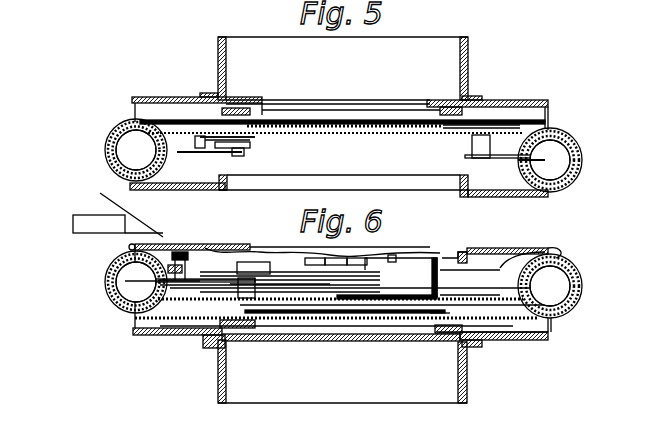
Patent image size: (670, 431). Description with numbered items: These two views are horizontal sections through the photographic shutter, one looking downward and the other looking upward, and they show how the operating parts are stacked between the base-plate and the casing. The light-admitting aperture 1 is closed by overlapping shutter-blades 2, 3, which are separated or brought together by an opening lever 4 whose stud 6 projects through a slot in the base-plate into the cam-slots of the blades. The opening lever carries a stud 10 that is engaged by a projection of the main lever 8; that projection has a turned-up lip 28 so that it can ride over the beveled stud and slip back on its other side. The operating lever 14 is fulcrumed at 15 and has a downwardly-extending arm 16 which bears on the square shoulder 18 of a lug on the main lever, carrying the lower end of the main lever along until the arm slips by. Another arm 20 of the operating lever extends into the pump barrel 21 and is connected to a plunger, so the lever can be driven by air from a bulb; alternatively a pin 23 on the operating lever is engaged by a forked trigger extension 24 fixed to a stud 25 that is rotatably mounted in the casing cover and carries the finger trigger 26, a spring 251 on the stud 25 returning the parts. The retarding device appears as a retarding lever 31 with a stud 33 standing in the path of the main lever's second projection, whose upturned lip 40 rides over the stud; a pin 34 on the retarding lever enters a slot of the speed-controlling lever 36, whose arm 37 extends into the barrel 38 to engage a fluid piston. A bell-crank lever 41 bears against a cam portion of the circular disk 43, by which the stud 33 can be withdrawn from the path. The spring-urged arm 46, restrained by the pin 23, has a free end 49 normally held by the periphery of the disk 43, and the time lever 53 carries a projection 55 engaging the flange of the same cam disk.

In FIG. 6, the light-admitting aperture 1 is at (272, 325).
In FIG. 5, the shutter-blade 2 is at (316, 130).
In FIG. 6, the shutter-blade 2 is at (305, 312).
In FIG. 5, the shutter-blade 3 is at (394, 130).
In FIG. 6, the shutter-blade 3 is at (400, 318).
In FIG. 6, the opening lever 4 is at (372, 302).
In FIG. 6, the stud 6 is at (338, 318).
In FIG. 5, the main lever 8 is at (264, 137).
In FIG. 6, the main lever 8 is at (313, 297).
In FIG. 6, the stud 10 is at (413, 293).
In FIG. 5, the operating lever 14 is at (208, 153).
In FIG. 6, the operating lever 14 is at (185, 292).
In FIG. 6, the fulcrum 15 is at (196, 302).
In FIG. 5, the arm 16 is at (250, 148).
In FIG. 5, the square shoulder 18 is at (238, 148).
In FIG. 6, the arm 20 is at (134, 287).
In FIG. 5, the pump barrel 21 is at (117, 122).
In FIG. 6, the pump barrel 21 is at (107, 281).
In FIG. 6, the pin 23 is at (200, 256).
In FIG. 6, the trigger extension 24 is at (115, 263).
In FIG. 5, the stud 25 is at (198, 158).
In FIG. 6, the stud 25 is at (180, 246).
In FIG. 6, the trigger 26 is at (73, 226).
In FIG. 6, the projecting lip 28 is at (407, 292).
In FIG. 6, the retarding lever 31 is at (495, 305).
In FIG. 6, the stud 33 is at (452, 296).
In FIG. 6, the pin 34 is at (548, 252).
In FIG. 5, the speed-controlling lever 36 is at (518, 163).
In FIG. 5, the arm 37 is at (540, 166).
In FIG. 5, the barrel 38 is at (574, 137).
In FIG. 6, the barrel 38 is at (582, 278).
In FIG. 6, the upturned lip 40 is at (452, 292).
In FIG. 6, the bell-crank lever 41 is at (445, 258).
In FIG. 6, the circular disk 43 is at (387, 250).
In FIG. 5, the arm 46 is at (185, 153).
In FIG. 6, the arm 46 is at (136, 322).
In FIG. 6, the free end 49 is at (240, 270).
In FIG. 6, the time lever 53 is at (222, 302).
In FIG. 6, the projection 55 is at (268, 276).
In FIG. 6, the spring 251 is at (112, 207).